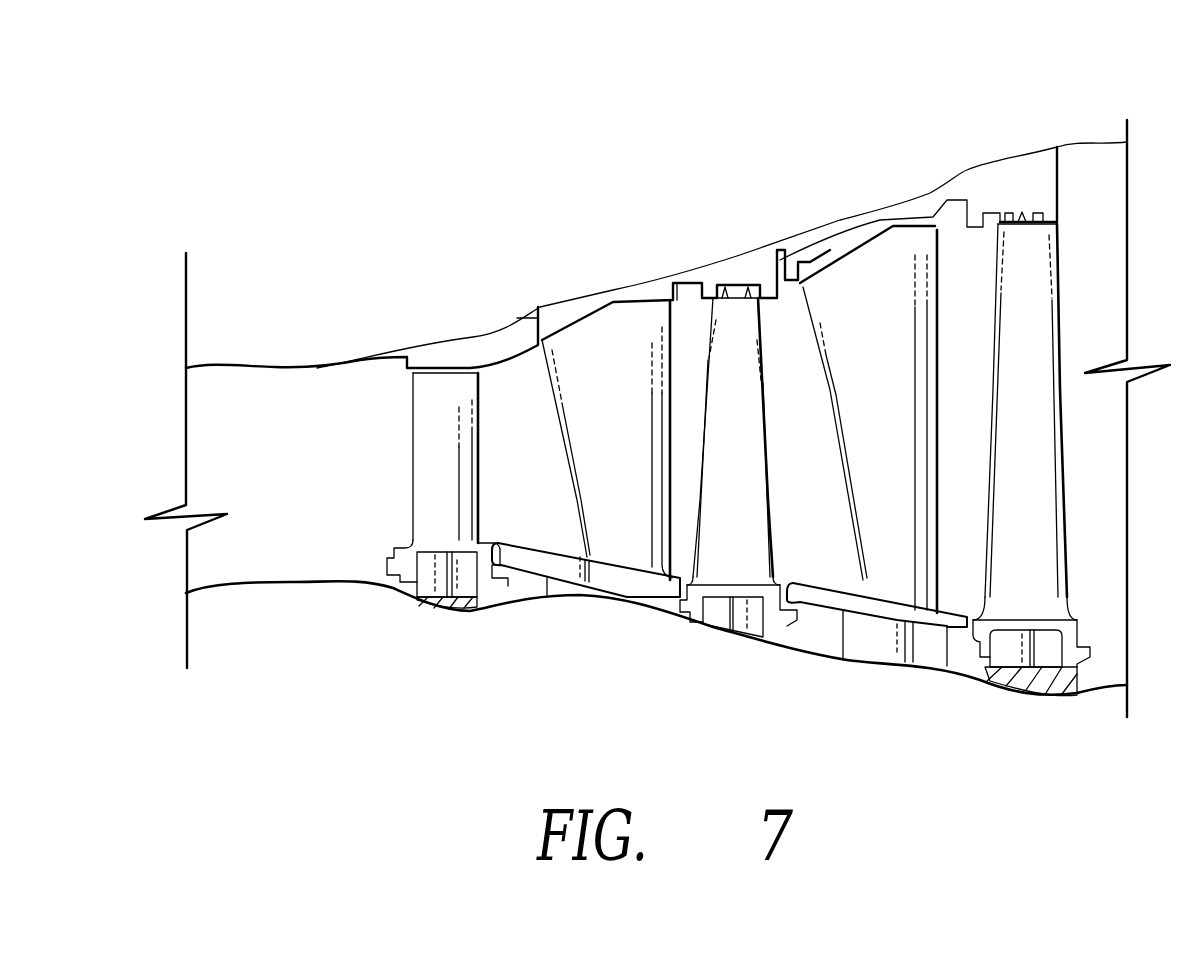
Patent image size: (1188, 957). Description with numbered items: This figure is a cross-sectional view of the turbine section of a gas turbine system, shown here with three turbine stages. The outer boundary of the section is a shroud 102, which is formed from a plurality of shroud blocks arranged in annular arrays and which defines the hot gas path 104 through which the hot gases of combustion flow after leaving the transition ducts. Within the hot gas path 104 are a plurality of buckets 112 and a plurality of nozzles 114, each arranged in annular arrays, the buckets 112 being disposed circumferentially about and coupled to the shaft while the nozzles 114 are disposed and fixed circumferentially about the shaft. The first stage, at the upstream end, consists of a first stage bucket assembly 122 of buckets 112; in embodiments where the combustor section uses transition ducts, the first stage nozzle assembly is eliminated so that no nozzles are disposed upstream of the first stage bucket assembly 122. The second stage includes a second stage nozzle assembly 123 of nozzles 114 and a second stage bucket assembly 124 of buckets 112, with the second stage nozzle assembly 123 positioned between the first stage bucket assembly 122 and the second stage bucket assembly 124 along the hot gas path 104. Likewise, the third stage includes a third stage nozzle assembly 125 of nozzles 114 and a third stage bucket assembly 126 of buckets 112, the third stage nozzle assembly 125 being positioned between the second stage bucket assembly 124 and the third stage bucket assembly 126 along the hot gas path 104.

The shroud 102 is at (473, 347).
The hot gas path 104 is at (331, 483).
The buckets 112 is at (430, 413).
The nozzles 114 is at (613, 337).
The first stage bucket assembly 122 is at (450, 620).
The second stage nozzle assembly 123 is at (630, 621).
The second stage bucket assembly 124 is at (735, 651).
The third stage nozzle assembly 125 is at (903, 680).
The third stage bucket assembly 126 is at (1018, 700).